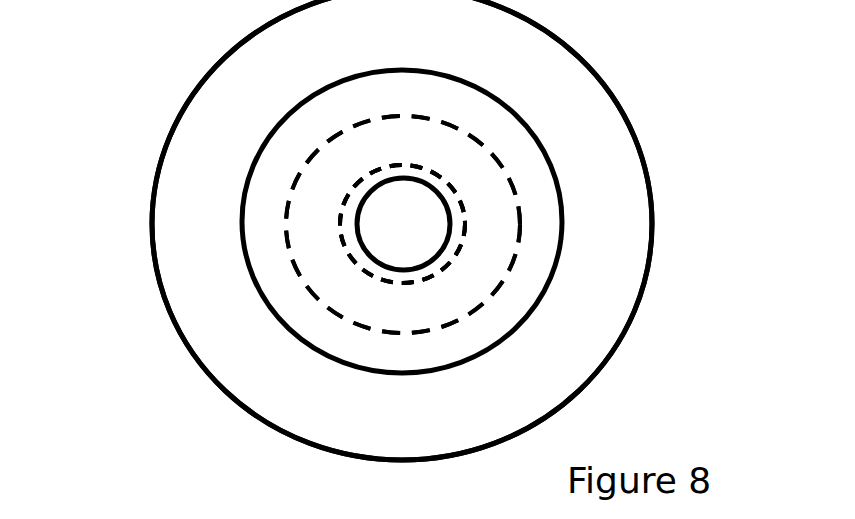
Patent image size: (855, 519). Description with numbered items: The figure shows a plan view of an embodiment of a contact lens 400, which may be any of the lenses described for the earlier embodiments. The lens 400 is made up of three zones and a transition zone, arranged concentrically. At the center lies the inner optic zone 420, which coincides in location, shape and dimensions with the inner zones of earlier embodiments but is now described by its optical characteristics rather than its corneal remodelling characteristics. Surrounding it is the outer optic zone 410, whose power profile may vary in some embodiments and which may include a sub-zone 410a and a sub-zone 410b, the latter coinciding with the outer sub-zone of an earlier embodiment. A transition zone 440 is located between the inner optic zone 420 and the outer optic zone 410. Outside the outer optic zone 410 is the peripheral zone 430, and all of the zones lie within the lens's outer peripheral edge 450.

The contact lens 400 is at (138, 77).
The outer optic zone 410 is at (432, 139).
The sub-zone 410a is at (485, 250).
The sub-zone 410b is at (542, 205).
The inner optic zone 420 is at (429, 240).
The peripheral zone 430 is at (432, 425).
The transition zone 440 is at (378, 277).
The outer peripheral edge 450 is at (158, 282).